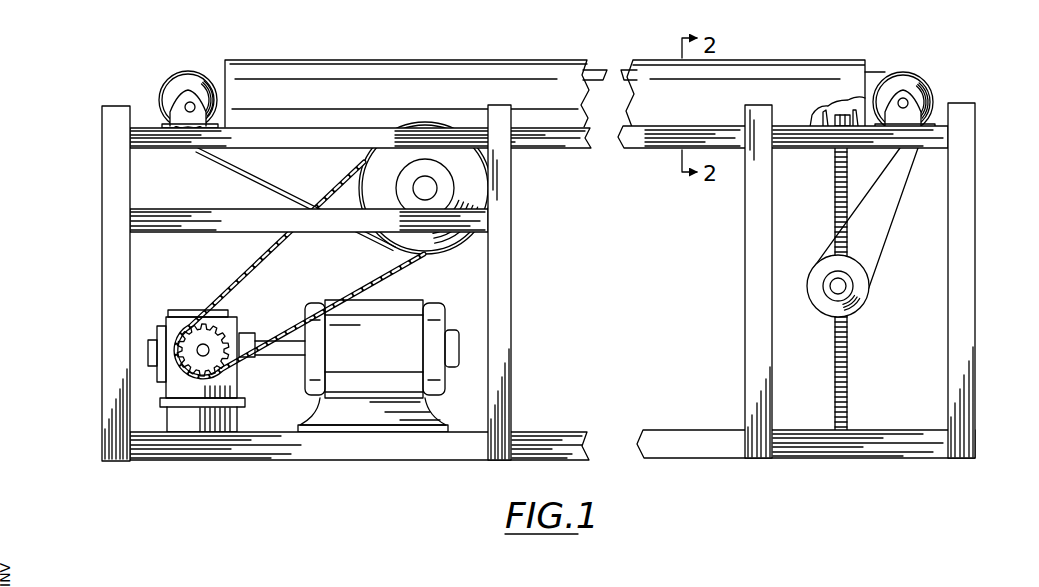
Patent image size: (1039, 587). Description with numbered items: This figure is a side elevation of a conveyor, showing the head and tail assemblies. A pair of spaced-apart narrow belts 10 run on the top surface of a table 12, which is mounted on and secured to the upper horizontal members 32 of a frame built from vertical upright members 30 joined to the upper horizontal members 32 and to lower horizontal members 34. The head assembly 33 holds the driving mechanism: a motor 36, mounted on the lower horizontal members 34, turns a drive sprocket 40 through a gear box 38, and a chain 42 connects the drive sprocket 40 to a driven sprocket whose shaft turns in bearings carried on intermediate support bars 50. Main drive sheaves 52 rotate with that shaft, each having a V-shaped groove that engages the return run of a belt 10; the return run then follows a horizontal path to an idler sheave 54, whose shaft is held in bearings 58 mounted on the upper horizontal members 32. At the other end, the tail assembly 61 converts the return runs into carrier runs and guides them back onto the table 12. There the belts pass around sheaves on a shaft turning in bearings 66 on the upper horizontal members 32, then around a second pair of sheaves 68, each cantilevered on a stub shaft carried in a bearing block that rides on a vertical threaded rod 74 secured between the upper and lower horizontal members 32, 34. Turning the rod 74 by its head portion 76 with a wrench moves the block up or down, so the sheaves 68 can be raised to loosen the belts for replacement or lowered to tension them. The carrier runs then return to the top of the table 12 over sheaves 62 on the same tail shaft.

The narrow belt 10 is at (598, 69).
The table 12 is at (417, 56).
The vertical upright member 30 is at (112, 298).
The upper horizontal member 32 is at (567, 150).
The head assembly 33 is at (157, 82).
The lower horizontal member 34 is at (331, 450).
The motor 36 is at (413, 298).
The gear box 38 is at (187, 318).
The drive sprocket 40 is at (218, 352).
The chain 42 is at (262, 266).
The intermediate support bar 50 is at (238, 197).
The main drive sheave 52 is at (480, 200).
The idler sheave 54 is at (190, 86).
The bearing 58 is at (172, 107).
The tail assembly 61 is at (980, 170).
The sheave 62 is at (905, 88).
The bearing 66 is at (913, 112).
The sheave 68 is at (857, 295).
The threaded rod 74 is at (847, 372).
The head portion 76 is at (830, 120).